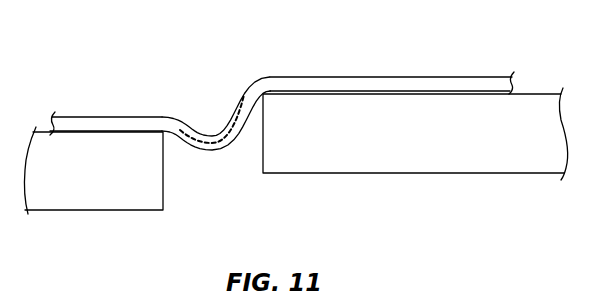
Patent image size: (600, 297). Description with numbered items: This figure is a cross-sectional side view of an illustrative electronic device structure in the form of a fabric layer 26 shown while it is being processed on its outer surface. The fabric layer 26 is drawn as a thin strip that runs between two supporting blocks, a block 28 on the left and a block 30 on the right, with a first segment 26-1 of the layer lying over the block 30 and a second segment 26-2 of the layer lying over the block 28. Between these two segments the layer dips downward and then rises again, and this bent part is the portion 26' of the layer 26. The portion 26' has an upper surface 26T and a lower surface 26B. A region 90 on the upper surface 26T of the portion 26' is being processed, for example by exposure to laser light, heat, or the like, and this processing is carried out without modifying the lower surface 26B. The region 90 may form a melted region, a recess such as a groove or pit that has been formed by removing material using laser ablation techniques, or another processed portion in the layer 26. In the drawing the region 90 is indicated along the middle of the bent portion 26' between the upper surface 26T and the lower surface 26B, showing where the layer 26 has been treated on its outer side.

The layer 26 is at (282, 84).
The first segment of flexible printed circuit 26-1 is at (357, 80).
The second segment of flexible printed circuit 26-2 is at (90, 121).
The upper surface 26T is at (170, 118).
The lower surface 26B is at (220, 150).
The portion 26' is at (207, 87).
The region 90 is at (200, 146).
The display 28 is at (90, 196).
The printed circuit board 30 is at (431, 162).